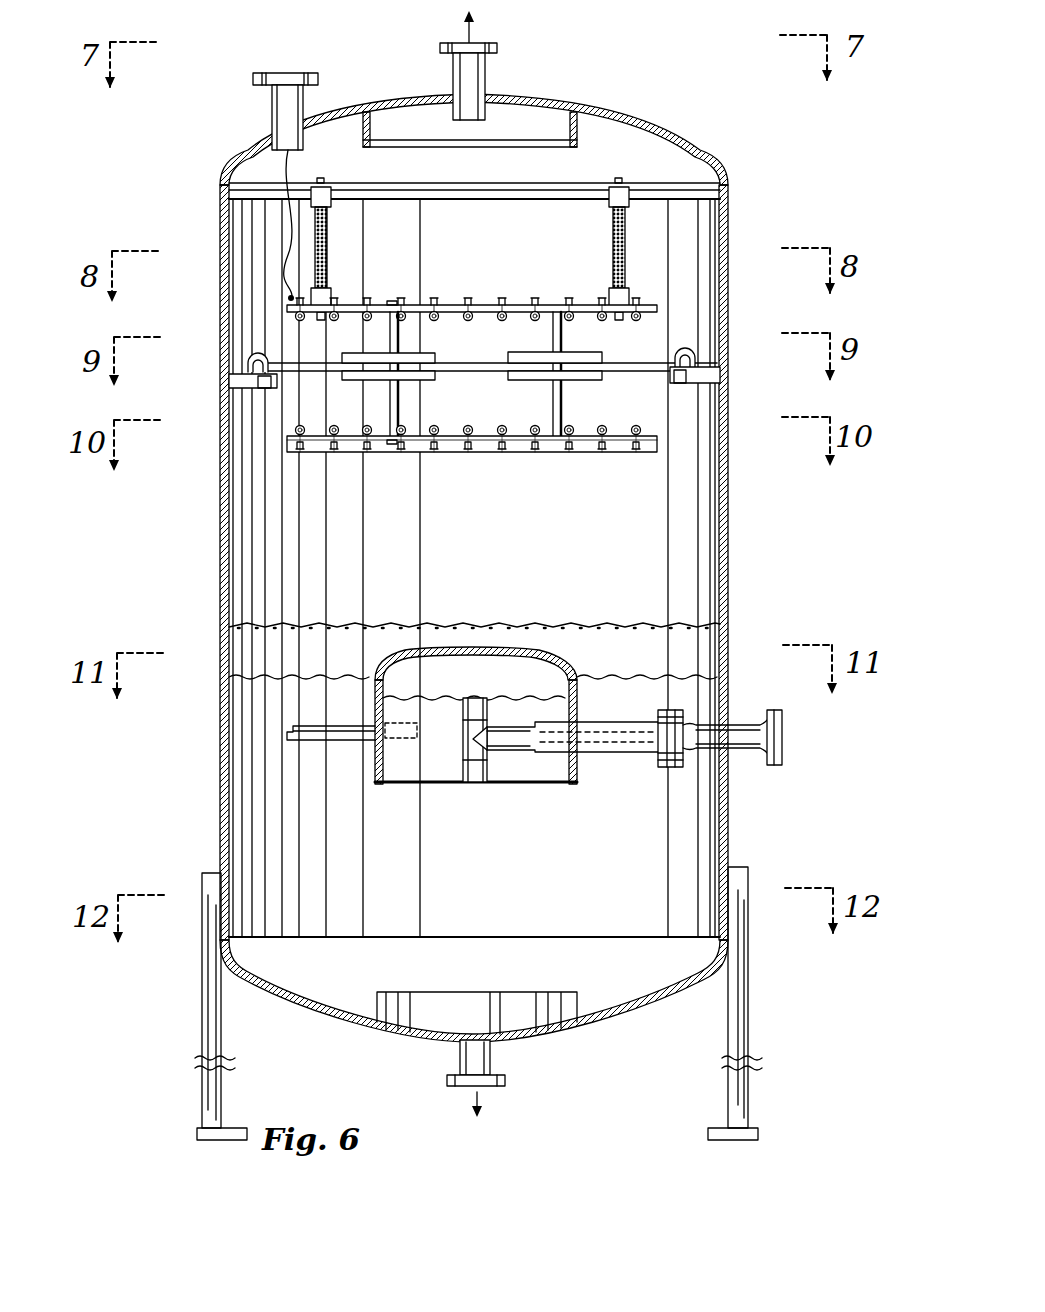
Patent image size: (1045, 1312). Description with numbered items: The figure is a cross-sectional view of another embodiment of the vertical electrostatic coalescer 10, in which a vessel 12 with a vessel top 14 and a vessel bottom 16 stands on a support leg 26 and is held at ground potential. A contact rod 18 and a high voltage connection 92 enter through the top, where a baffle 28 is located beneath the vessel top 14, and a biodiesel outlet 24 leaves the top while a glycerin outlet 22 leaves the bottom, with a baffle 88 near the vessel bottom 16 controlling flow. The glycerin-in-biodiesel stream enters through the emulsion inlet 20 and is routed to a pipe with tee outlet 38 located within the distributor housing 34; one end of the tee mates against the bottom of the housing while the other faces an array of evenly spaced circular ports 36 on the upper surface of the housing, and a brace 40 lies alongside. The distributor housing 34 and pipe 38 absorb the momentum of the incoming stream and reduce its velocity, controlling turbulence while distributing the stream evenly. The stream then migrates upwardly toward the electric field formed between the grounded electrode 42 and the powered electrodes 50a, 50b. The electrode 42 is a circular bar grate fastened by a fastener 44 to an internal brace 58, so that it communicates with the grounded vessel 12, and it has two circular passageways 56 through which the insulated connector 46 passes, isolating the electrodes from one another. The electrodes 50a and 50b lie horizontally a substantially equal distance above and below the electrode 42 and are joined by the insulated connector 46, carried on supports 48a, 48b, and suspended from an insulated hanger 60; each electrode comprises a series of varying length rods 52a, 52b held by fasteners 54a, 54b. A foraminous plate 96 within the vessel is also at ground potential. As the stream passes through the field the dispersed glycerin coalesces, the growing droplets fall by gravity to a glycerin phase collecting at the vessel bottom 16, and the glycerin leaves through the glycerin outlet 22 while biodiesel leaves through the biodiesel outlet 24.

The electrostatic coalescer 10 is at (230, 136).
The vessel 12 is at (727, 215).
The vessel top 14 is at (402, 96).
The vessel bottom 16 is at (345, 1023).
The contact rod 18 is at (262, 74).
The emulsion inlet 20 is at (782, 757).
The glycerin outlet 22 is at (505, 1087).
The biodiesel outlet 24 is at (500, 48).
The support leg 26 is at (204, 990).
The baffle 28 is at (580, 135).
The distributor housing 34 is at (478, 650).
The port 36 is at (520, 650).
The pipe with tee outlet 38 is at (508, 755).
The brace 40 is at (320, 748).
The electrode 42 is at (640, 372).
The fastener 44 is at (250, 358).
The insulated connector 46 is at (565, 330).
The support 48a is at (518, 298).
The support 48b is at (520, 455).
The electrode 50a is at (495, 292).
The electrode 50b is at (584, 455).
The rod 52a is at (406, 320).
The rod 52b is at (406, 426).
The fastener 54a is at (436, 298).
The fastener 54b is at (440, 454).
The passageway 56 is at (358, 383).
The brace 58 is at (690, 383).
The insulated hanger 60 is at (330, 257).
The baffle 88 is at (555, 999).
The high voltage connection 92 is at (290, 297).
The foraminous plate 96 is at (615, 626).